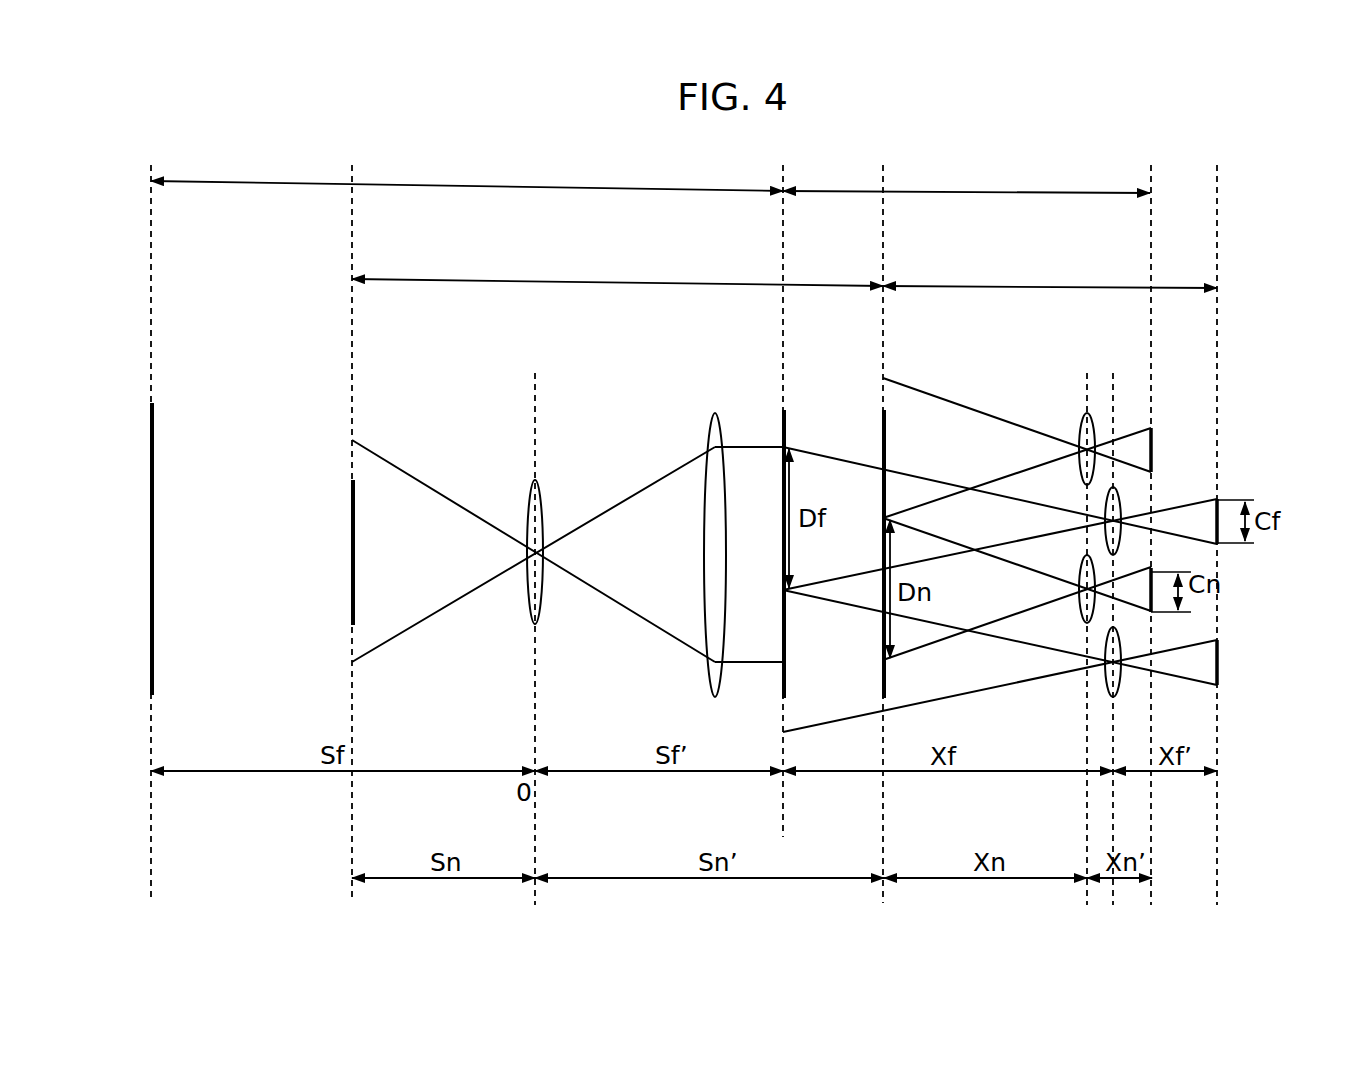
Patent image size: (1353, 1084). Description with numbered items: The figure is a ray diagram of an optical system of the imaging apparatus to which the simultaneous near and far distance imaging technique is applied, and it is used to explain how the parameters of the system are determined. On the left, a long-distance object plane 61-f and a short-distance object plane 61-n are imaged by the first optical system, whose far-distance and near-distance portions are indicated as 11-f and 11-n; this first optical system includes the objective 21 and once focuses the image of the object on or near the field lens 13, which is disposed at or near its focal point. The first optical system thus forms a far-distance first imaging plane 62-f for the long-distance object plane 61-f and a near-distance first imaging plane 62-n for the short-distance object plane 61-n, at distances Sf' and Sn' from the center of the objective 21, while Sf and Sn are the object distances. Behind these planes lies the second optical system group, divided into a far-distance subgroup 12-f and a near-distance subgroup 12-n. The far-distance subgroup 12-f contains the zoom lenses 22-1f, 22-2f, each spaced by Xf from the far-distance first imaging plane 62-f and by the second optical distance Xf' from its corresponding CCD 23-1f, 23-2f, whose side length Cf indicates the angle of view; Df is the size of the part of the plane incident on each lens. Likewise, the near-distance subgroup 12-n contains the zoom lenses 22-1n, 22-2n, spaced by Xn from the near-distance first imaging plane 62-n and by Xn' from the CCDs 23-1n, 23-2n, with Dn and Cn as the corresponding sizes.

The first imaging optical path length (far) 11-f is at (467, 174).
The first imaging optical path length (near) 11-n is at (617, 269).
The far-distance subgroup 12-f is at (966, 179).
The near-distance subgroup 12-n is at (1050, 273).
The field lens 13 is at (713, 412).
The objective 21 is at (544, 478).
The long-distance object plane 61-f is at (155, 549).
The short-distance object plane 61-n is at (356, 549).
The far-distance first imaging plane 62-f is at (788, 428).
The near-distance first imaging plane 62-n is at (888, 428).
The zoom lens in the near-distance subgroup 22-1n is at (1080, 424).
The zoom lens in the far-distance subgroup 22-1f is at (1120, 498).
The zoom lens in the near-distance subgroup 22-2n is at (1095, 615).
The zoom lens in the far-distance subgroup 22-2f is at (1108, 693).
The CCD in the near-distance subgroup 23-1n is at (1153, 452).
The CCD in the far-distance subgroup 23-1f is at (1220, 533).
The CCD in the near-distance subgroup 23-2n is at (1155, 597).
The CCD in the far-distance subgroup 23-2f is at (1221, 669).